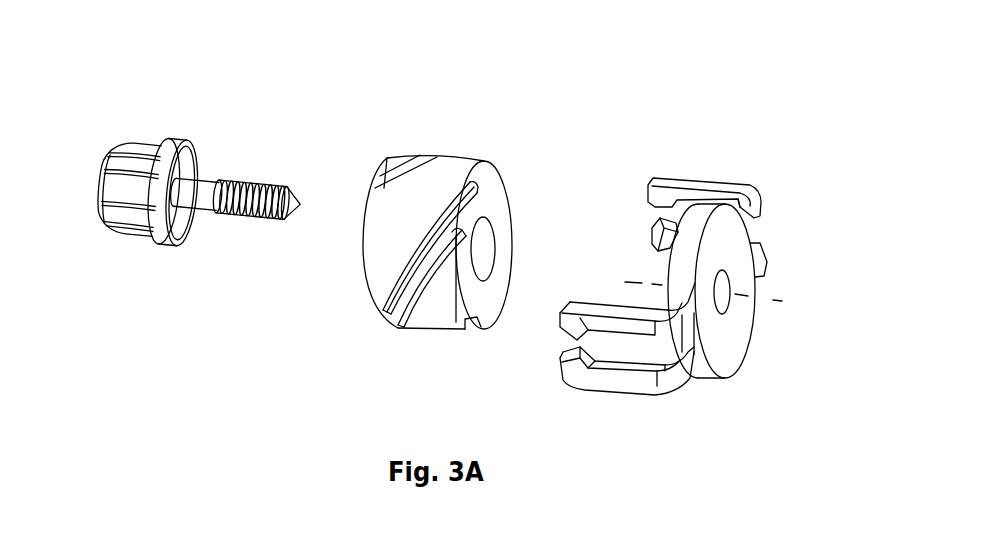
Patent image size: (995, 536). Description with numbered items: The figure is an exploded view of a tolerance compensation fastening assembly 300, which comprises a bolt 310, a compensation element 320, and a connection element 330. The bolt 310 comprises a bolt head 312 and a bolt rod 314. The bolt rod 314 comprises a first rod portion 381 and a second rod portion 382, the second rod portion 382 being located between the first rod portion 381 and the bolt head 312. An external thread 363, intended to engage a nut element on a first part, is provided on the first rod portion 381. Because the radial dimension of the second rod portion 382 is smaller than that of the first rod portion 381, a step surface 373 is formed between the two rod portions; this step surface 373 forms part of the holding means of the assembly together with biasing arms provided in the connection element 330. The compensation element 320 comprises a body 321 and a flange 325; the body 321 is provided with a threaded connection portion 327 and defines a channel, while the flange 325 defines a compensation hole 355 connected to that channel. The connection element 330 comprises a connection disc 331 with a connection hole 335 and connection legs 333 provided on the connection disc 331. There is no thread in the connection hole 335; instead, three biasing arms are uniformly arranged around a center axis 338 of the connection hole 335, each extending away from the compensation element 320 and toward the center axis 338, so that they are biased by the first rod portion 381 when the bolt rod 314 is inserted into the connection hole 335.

The tolerance compensation fastening assembly 300 is at (680, 108).
The bolt 310 is at (247, 161).
The bolt head 312 is at (171, 141).
The bolt rod 314 is at (243, 277).
The step surface 373 is at (207, 182).
The external thread 363 is at (275, 181).
The second rod portion 382 is at (201, 211).
The first rod portion 381 is at (235, 216).
The compensation element 320 is at (542, 182).
The body 321 is at (372, 275).
The threaded connection portion 327 is at (396, 315).
The flange 325 is at (494, 278).
The compensation hole 355 is at (481, 254).
The connection element 330 is at (796, 234).
The connection disc 331 is at (727, 340).
The connection legs 333 is at (707, 182).
The connection hole 335 is at (721, 281).
The center axis 338 is at (743, 297).